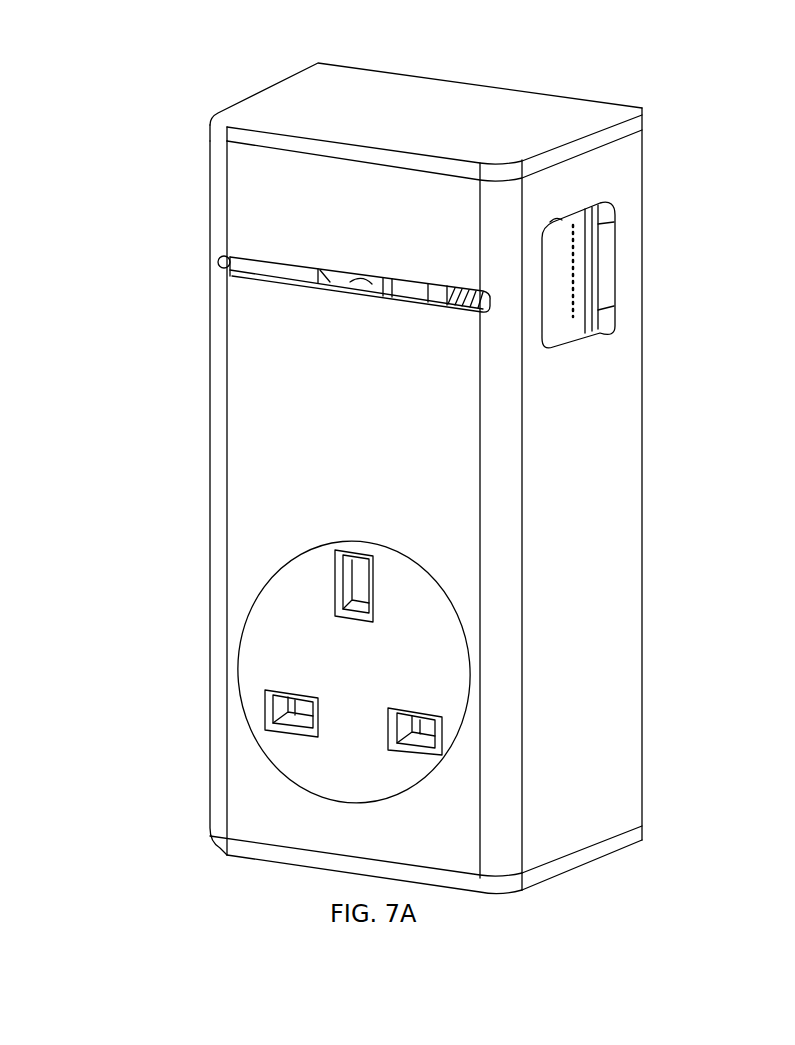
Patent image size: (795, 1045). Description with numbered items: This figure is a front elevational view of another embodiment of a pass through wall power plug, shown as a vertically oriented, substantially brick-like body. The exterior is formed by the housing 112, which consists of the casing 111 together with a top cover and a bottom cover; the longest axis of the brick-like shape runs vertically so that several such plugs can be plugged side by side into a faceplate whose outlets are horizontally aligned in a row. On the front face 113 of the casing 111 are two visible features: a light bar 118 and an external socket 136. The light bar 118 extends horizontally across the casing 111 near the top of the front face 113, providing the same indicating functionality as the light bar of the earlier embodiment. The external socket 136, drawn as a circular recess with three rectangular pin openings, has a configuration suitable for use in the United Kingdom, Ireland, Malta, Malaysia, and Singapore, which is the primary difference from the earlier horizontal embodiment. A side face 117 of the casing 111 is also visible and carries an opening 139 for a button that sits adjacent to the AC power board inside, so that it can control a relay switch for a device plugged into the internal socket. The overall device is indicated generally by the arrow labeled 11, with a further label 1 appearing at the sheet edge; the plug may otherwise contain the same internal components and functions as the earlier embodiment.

The plug adapter device 11 is at (660, 845).
The casing 111 is at (495, 522).
The housing 112 is at (642, 147).
The front face 113 is at (245, 418).
The side face 117 is at (555, 442).
The light bar 118 is at (248, 263).
The port slot 139 is at (578, 258).
The external socket 136 is at (430, 688).
The adapter 1 is at (718, 474).